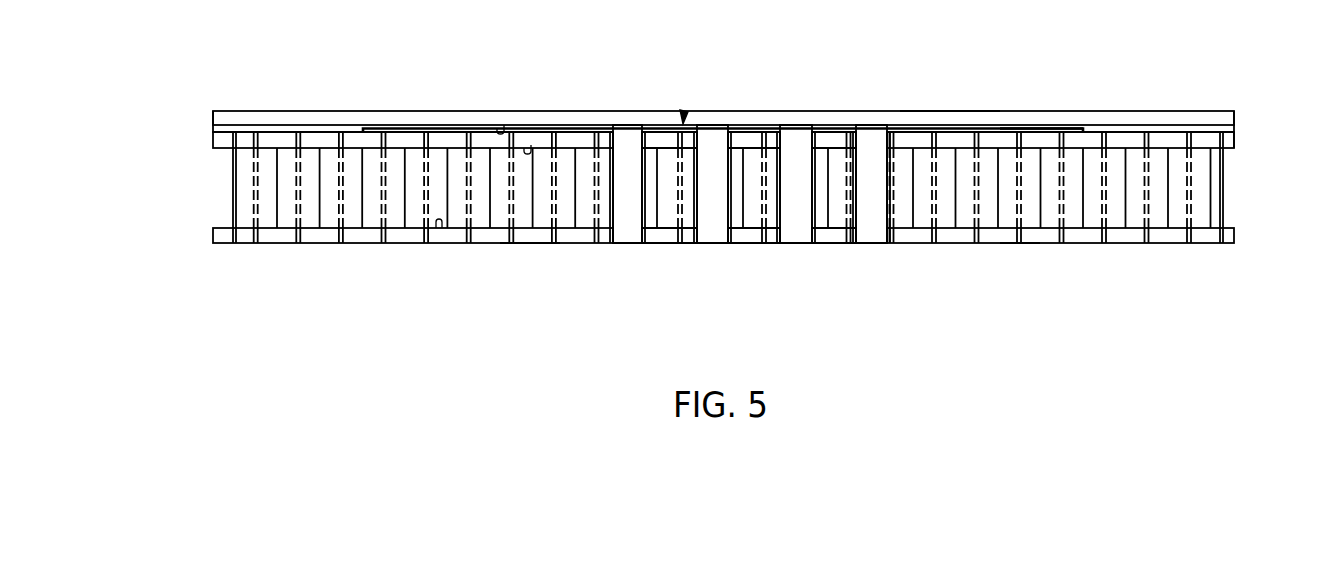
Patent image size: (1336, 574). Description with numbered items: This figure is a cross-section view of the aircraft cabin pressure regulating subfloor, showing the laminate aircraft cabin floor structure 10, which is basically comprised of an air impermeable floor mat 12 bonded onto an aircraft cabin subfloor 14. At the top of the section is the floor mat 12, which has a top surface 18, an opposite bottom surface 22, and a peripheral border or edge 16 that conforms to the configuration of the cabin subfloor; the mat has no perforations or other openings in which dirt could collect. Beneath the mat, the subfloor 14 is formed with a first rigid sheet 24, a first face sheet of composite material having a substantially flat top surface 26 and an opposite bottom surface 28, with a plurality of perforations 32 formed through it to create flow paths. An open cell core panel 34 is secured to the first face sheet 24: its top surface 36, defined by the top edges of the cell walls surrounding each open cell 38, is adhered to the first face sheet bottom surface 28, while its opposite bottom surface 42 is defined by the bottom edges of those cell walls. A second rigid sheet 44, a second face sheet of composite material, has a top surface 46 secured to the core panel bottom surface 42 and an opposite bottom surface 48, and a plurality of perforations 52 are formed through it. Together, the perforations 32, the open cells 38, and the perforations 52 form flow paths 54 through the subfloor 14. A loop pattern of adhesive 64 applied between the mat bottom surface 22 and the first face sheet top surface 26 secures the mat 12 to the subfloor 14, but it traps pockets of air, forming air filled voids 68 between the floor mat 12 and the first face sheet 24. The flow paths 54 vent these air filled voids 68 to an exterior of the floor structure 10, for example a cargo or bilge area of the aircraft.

The laminate aircraft cabin floor structure 10 is at (1130, 50).
The air impermeable floor mat 12 is at (952, 111).
The aircraft cabin subfloor 14 is at (1247, 148).
The peripheral border or edge 16 is at (213, 118).
The top surface 18 is at (452, 111).
The bottom surface 22 is at (504, 125).
The first rigid sheet 24 is at (213, 140).
The top surface 26 is at (400, 132).
The bottom surface 28 is at (531, 145).
The perforations 32 is at (1020, 128).
The open cell core panel 34 is at (1223, 187).
The top surface 36 is at (905, 142).
The open cell 38 is at (823, 170).
The bottom surface 42 is at (950, 228).
The second rigid sheet 44 is at (213, 235).
The top surface 46 is at (442, 228).
The bottom surface 48 is at (528, 243).
The perforations 52 is at (1021, 245).
The flow paths 54 is at (1148, 218).
The loop pattern of adhesive 64 is at (213, 129).
The air filled voids 68 is at (685, 112).